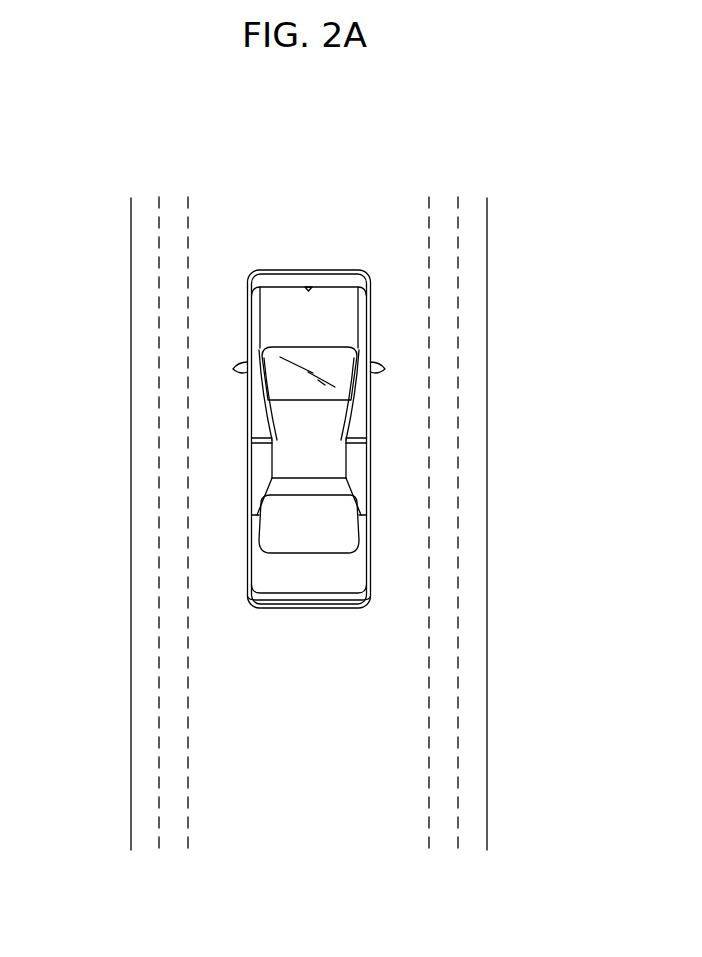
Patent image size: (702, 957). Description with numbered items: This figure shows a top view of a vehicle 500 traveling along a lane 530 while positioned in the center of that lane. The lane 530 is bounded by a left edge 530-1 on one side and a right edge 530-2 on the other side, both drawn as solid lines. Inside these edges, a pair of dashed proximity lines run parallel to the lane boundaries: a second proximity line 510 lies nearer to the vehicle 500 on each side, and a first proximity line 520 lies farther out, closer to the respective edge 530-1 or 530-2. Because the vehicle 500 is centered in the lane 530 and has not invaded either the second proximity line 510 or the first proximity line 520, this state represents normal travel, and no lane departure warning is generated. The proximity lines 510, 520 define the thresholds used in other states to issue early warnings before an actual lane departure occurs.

The vehicle 500 is at (312, 269).
The second proximity line 510 is at (188, 204).
The first proximity line 520 is at (159, 204).
The lane 530 is at (281, 191).
The left edge 530-1 is at (131, 222).
The right edge 530-2 is at (487, 221).